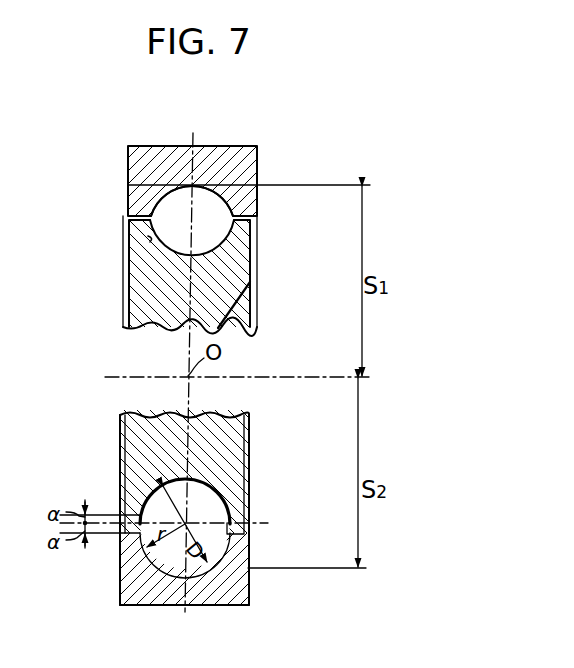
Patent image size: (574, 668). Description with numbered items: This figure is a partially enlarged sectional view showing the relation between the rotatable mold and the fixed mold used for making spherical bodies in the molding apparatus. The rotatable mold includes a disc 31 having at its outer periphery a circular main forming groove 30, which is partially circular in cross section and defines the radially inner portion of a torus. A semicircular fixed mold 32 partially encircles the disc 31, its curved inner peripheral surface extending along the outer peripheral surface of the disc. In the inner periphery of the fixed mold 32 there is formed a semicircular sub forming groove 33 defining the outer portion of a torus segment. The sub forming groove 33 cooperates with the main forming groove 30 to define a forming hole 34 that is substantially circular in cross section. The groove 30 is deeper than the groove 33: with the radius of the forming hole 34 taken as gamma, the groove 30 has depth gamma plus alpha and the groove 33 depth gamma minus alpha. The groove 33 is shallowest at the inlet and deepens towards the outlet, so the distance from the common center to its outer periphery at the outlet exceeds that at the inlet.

The main forming groove 30 is at (150, 240).
The disc 31 is at (240, 282).
The fixed mold 32 is at (239, 160).
The sub forming groove 33 is at (152, 205).
The forming hole 34 is at (220, 232).